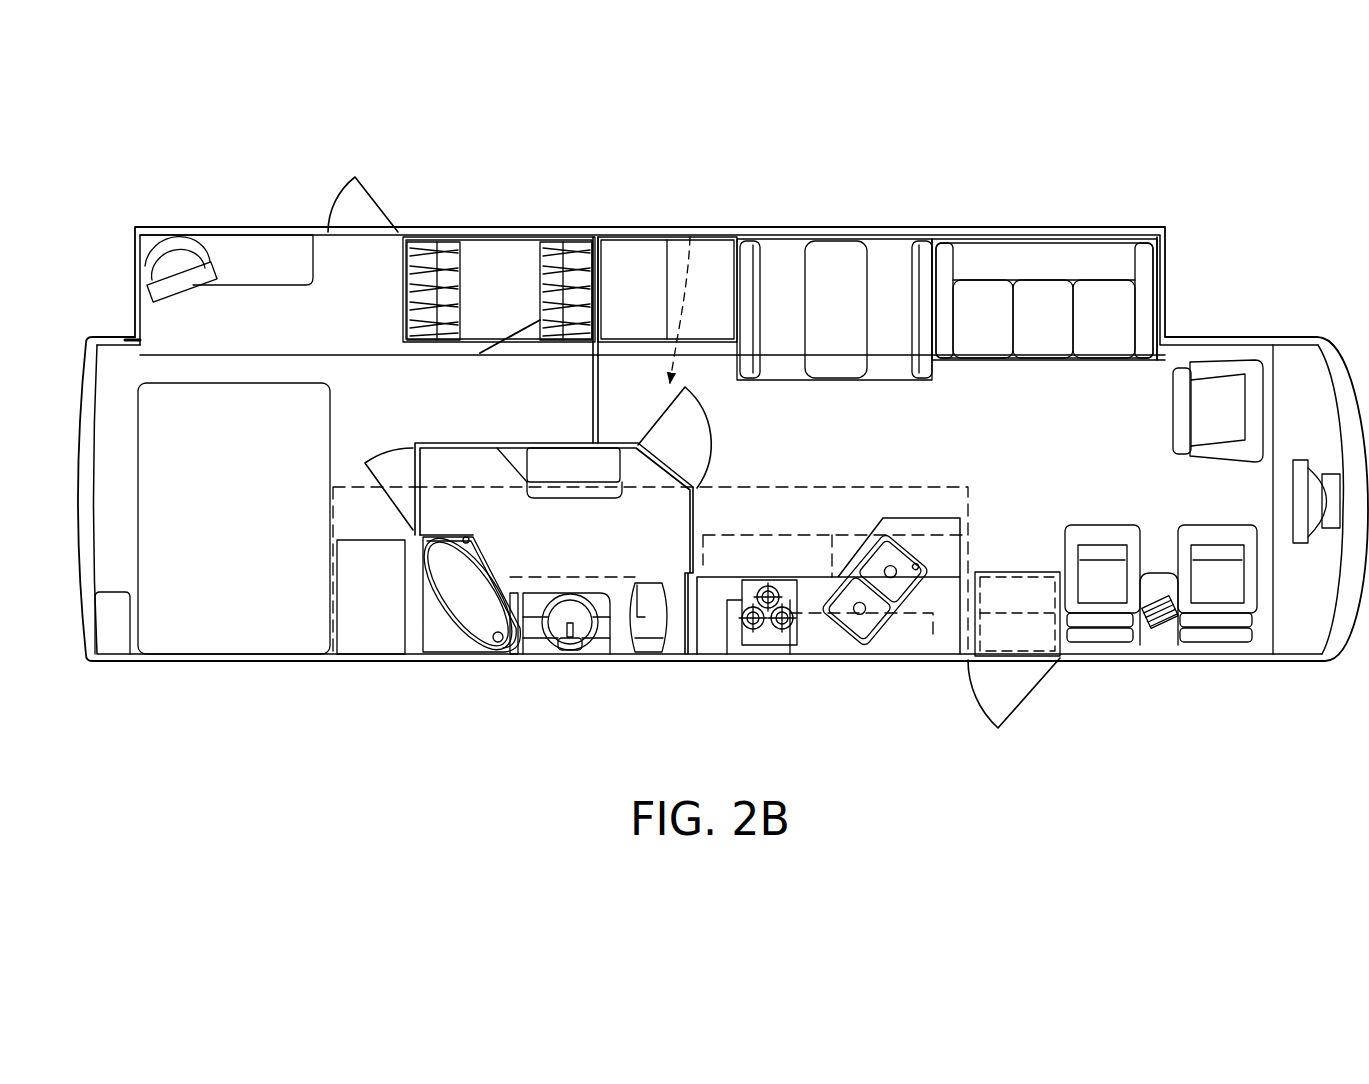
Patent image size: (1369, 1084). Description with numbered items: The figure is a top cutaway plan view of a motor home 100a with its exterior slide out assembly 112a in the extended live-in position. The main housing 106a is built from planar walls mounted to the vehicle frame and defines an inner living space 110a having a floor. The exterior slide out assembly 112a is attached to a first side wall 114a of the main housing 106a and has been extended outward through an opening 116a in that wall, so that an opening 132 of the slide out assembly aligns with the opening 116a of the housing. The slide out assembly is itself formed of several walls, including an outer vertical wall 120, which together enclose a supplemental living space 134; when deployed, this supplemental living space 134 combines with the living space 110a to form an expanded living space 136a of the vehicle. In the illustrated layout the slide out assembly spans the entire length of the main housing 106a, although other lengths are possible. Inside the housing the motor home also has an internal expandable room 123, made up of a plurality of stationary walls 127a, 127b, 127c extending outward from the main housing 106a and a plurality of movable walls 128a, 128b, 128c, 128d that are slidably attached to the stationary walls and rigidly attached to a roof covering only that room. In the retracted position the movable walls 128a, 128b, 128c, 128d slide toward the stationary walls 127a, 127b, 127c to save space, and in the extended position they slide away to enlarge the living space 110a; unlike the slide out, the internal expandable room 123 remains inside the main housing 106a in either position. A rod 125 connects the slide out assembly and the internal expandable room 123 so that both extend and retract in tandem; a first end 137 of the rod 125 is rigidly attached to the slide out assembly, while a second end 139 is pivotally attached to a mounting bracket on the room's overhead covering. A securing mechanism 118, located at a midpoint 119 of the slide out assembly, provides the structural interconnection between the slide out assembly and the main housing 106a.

The motor home 100a is at (1252, 236).
The main housing 106a is at (110, 385).
The living space 110a is at (1082, 420).
The exterior slide out assembly 112a is at (600, 282).
The first side wall 114a is at (1255, 345).
The opening 116a is at (133, 330).
The securing mechanism 118 is at (652, 235).
The midpoint 119 is at (667, 237).
The outer vertical wall 120 is at (783, 237).
The internal expandable room 123 is at (530, 543).
The rod 125 is at (593, 392).
The stationary wall 127a is at (418, 637).
The stationary wall 127b is at (435, 535).
The stationary wall 127c is at (680, 587).
The movable wall 128a is at (415, 463).
The movable wall 128b is at (472, 440).
The movable wall 128c is at (660, 458).
The movable wall 128d is at (697, 508).
The opening 132 is at (214, 318).
The supplemental living space 134 is at (845, 276).
The expanded living space 136a is at (780, 237).
The first end 137 is at (590, 243).
The second end 139 is at (593, 432).